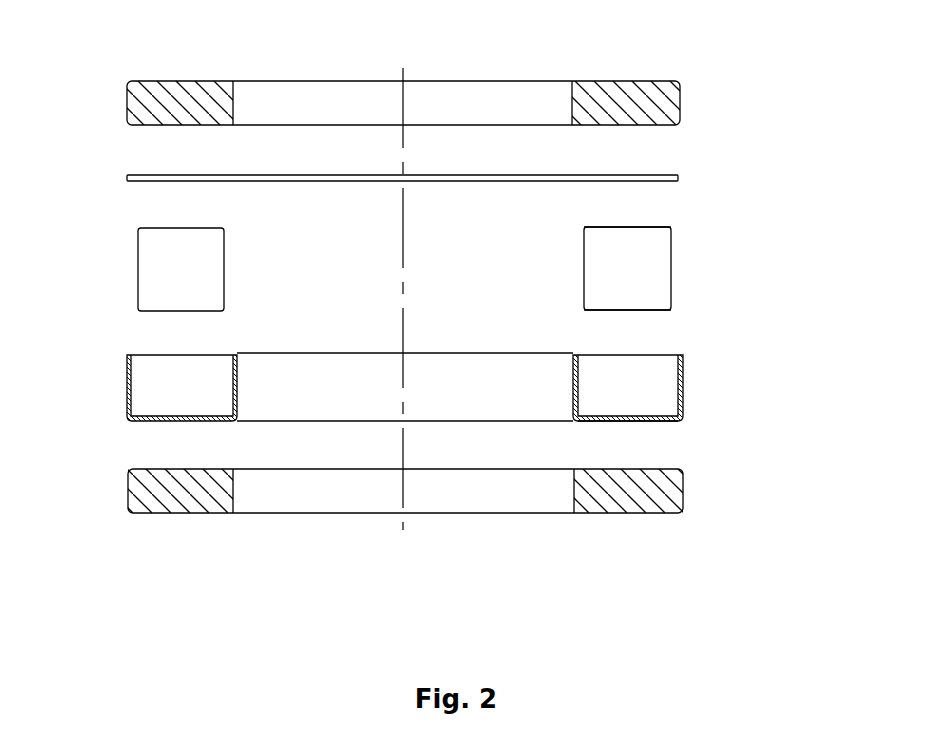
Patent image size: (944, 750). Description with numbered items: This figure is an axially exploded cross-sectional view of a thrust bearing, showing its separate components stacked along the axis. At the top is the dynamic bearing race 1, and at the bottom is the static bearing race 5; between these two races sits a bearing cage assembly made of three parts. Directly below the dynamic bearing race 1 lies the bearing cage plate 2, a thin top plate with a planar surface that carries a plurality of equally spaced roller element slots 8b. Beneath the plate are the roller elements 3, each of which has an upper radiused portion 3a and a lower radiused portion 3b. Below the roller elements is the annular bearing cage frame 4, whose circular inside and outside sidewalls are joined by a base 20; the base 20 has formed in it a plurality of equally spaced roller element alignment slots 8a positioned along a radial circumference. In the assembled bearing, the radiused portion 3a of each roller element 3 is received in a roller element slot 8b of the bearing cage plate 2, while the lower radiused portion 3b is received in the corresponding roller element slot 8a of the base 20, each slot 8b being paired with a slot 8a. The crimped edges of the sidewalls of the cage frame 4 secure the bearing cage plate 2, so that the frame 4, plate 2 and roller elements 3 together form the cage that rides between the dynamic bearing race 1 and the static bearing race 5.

The dynamic bearing race 1 is at (683, 98).
The bearing cage plate 2 is at (683, 172).
The roller element 3 is at (672, 263).
The radiused portion 3a is at (637, 226).
The lower radiused portion 3b is at (639, 306).
The annular bearing cage frame 4 is at (685, 383).
The static bearing race 5 is at (684, 483).
The roller element slot 8a is at (178, 402).
The roller element slot 8b is at (162, 176).
The base 20 is at (651, 421).